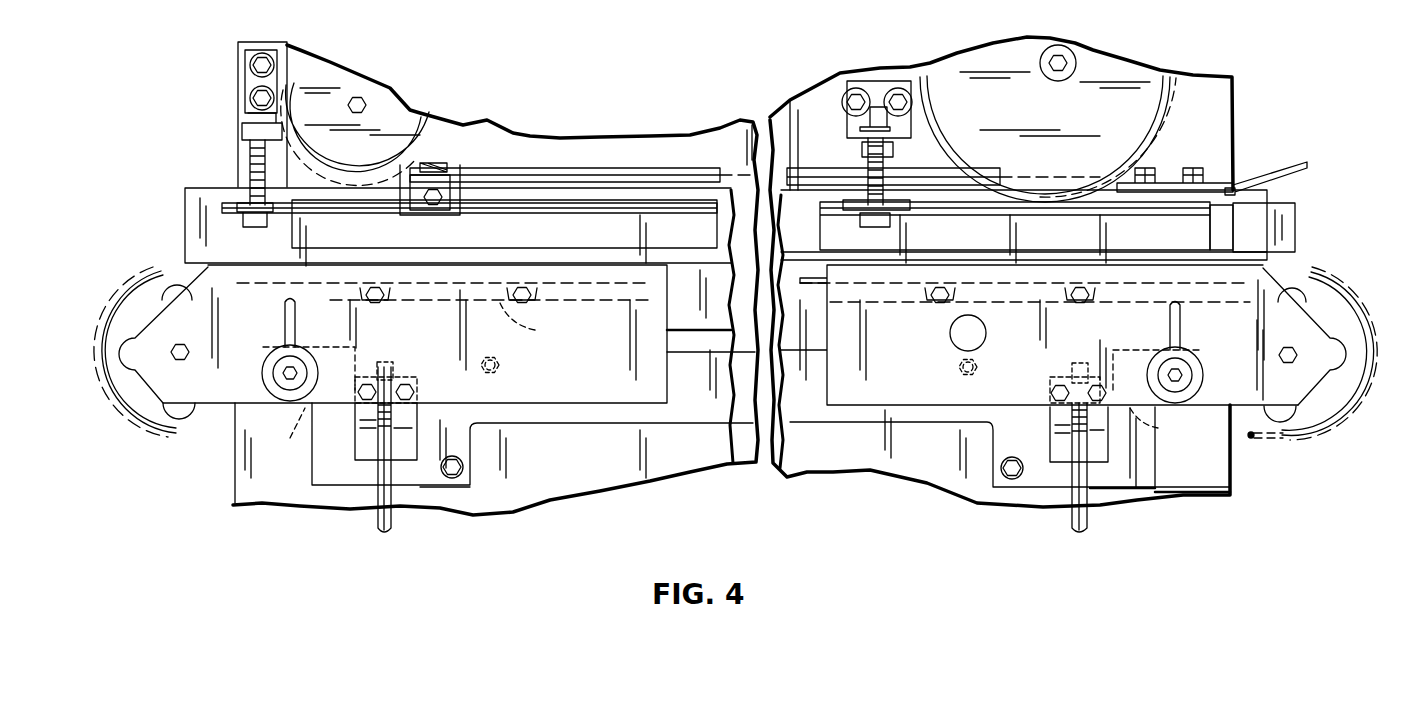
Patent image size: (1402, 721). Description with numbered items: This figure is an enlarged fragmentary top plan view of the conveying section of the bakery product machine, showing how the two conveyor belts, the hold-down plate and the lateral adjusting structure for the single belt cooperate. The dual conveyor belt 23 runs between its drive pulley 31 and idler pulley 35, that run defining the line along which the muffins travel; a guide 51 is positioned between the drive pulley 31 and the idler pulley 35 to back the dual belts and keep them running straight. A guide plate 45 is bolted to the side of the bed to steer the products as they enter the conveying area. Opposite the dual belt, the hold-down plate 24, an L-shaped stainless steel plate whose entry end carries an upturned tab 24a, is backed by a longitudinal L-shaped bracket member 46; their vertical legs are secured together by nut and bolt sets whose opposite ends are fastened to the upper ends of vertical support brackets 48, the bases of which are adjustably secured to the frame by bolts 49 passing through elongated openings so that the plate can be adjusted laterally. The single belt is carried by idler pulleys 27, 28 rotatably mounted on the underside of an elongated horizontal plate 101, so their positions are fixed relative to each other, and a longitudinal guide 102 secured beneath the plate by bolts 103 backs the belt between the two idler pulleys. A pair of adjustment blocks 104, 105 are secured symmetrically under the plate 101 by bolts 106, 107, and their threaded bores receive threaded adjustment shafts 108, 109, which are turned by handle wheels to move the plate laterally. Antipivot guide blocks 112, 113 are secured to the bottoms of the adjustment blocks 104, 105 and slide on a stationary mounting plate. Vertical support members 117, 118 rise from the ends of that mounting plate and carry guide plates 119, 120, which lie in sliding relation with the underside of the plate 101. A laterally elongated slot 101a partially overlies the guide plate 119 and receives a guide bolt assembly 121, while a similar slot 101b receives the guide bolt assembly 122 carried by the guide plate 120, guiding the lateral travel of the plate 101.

The conveyor belt 23 is at (1150, 145).
The hold-down plate 24 is at (1197, 207).
The upturned tab 24a is at (1288, 220).
The idler pulley 27 is at (1338, 303).
The idler pulley 28 is at (152, 277).
The drive pulley 31 is at (1135, 72).
The idler pulley 35 is at (338, 85).
The guide plate 45 is at (1296, 167).
The L-shaped bracket member 46 is at (1040, 242).
The vertical support bracket 48 is at (877, 85).
The bolt 49 is at (900, 97).
The guide 51 is at (588, 168).
The horizontal plate 101 is at (622, 340).
The laterally elongated slot 101a is at (285, 315).
The slot 101b is at (1180, 322).
The longitudinal guide 102 is at (532, 322).
The bolt 103 is at (525, 288).
The adjustment block 104 is at (393, 368).
The adjustment block 105 is at (1079, 362).
The bolt 106 is at (412, 390).
The bolt 107 is at (1052, 393).
The threaded adjustment shaft 108 is at (378, 520).
The threaded adjustment shaft 109 is at (1083, 475).
The antipivot guide block 112 is at (358, 440).
The antipivot guide block 113 is at (1053, 435).
The vertical support member 117 is at (348, 350).
The vertical support member 118 is at (1125, 350).
The guide plate 119 is at (280, 432).
The guide plate 120 is at (1158, 432).
The guide bolt assembly 121 is at (285, 375).
The guide bolt assembly 122 is at (1180, 374).